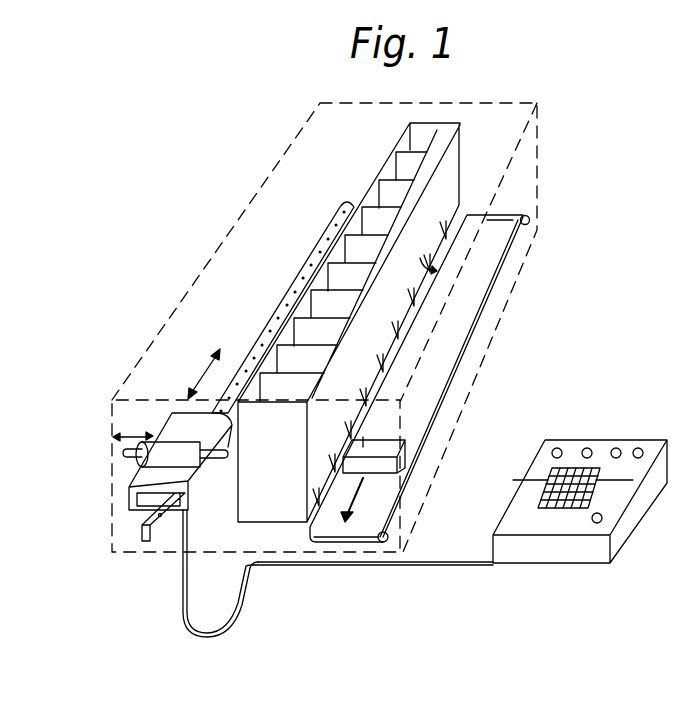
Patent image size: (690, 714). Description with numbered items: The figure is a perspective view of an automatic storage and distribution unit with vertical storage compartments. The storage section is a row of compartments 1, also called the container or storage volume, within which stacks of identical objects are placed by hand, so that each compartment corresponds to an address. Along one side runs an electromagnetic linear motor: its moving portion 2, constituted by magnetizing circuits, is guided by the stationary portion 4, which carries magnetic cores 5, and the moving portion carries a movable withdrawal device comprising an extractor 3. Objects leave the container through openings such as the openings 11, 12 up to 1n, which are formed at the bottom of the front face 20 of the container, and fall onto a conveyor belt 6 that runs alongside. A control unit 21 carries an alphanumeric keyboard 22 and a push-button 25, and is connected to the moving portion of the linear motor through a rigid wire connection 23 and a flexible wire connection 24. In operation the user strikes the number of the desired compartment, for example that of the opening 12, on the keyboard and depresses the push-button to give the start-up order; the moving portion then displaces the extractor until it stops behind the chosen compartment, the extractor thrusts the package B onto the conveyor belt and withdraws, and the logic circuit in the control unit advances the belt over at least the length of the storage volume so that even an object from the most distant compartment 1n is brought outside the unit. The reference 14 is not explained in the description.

The row of compartments 1 is at (437, 190).
The opening 1n is at (460, 210).
The moving portion 2 is at (143, 477).
The extractor 3 is at (160, 452).
The stationary portion 4 is at (292, 293).
The magnetic cores 5 is at (320, 258).
The conveyor belt 6 is at (472, 311).
The opening 11 is at (337, 508).
The opening 12 is at (323, 478).
The chute 14 is at (391, 346).
The front face 20 is at (437, 266).
The control unit 21 is at (624, 444).
The alphanumeric keyboard 22 is at (570, 472).
The rigid wire connection 23 is at (357, 566).
The flexible wire connection 24 is at (240, 621).
The push-button 25 is at (602, 518).
The package B is at (374, 445).